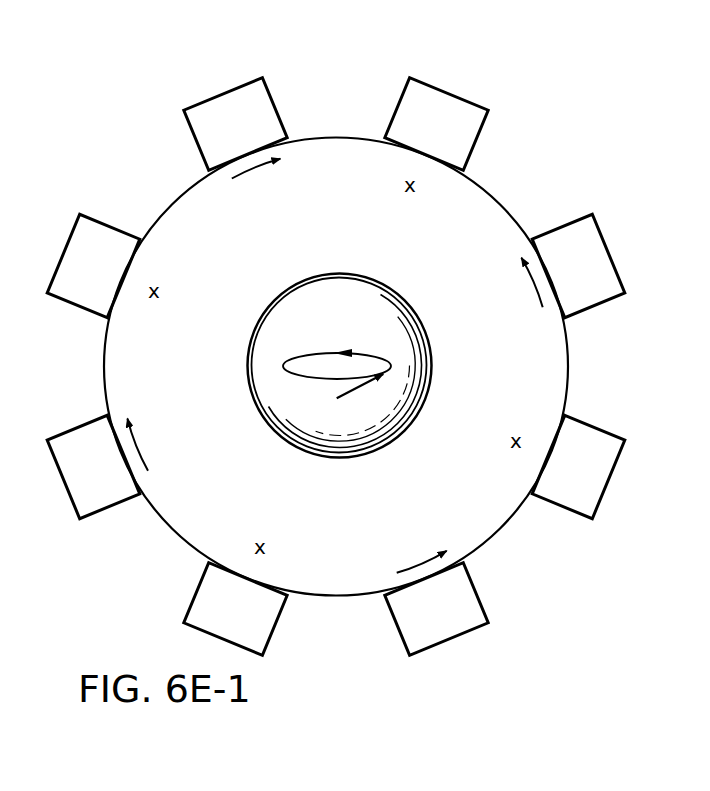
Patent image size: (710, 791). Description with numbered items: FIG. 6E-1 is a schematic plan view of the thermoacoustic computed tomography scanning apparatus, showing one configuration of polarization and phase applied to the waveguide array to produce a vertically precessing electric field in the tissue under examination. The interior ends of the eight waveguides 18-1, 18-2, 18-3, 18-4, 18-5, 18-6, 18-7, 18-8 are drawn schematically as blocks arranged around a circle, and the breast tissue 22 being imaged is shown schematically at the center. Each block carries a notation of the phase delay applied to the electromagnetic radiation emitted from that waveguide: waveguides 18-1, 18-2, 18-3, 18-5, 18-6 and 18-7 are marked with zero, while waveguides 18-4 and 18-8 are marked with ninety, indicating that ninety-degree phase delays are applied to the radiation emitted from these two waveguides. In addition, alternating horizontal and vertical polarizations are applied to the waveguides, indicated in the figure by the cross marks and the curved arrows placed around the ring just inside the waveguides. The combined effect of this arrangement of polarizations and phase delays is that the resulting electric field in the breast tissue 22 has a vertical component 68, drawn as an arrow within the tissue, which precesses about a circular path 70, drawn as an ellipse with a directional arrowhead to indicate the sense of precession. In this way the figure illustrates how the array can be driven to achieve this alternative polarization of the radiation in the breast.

The waveguide 18-1 is at (472, 100).
The waveguide 18-2 is at (592, 214).
The waveguide 18-3 is at (606, 430).
The waveguide 18-4 is at (481, 606).
The waveguide 18-5 is at (191, 605).
The waveguide 18-6 is at (50, 438).
The waveguide 18-7 is at (80, 214).
The waveguide 18-8 is at (196, 105).
The breast tissue 22 is at (384, 284).
The circular path 70 is at (313, 352).
The vertical component of electric field 68 is at (350, 391).